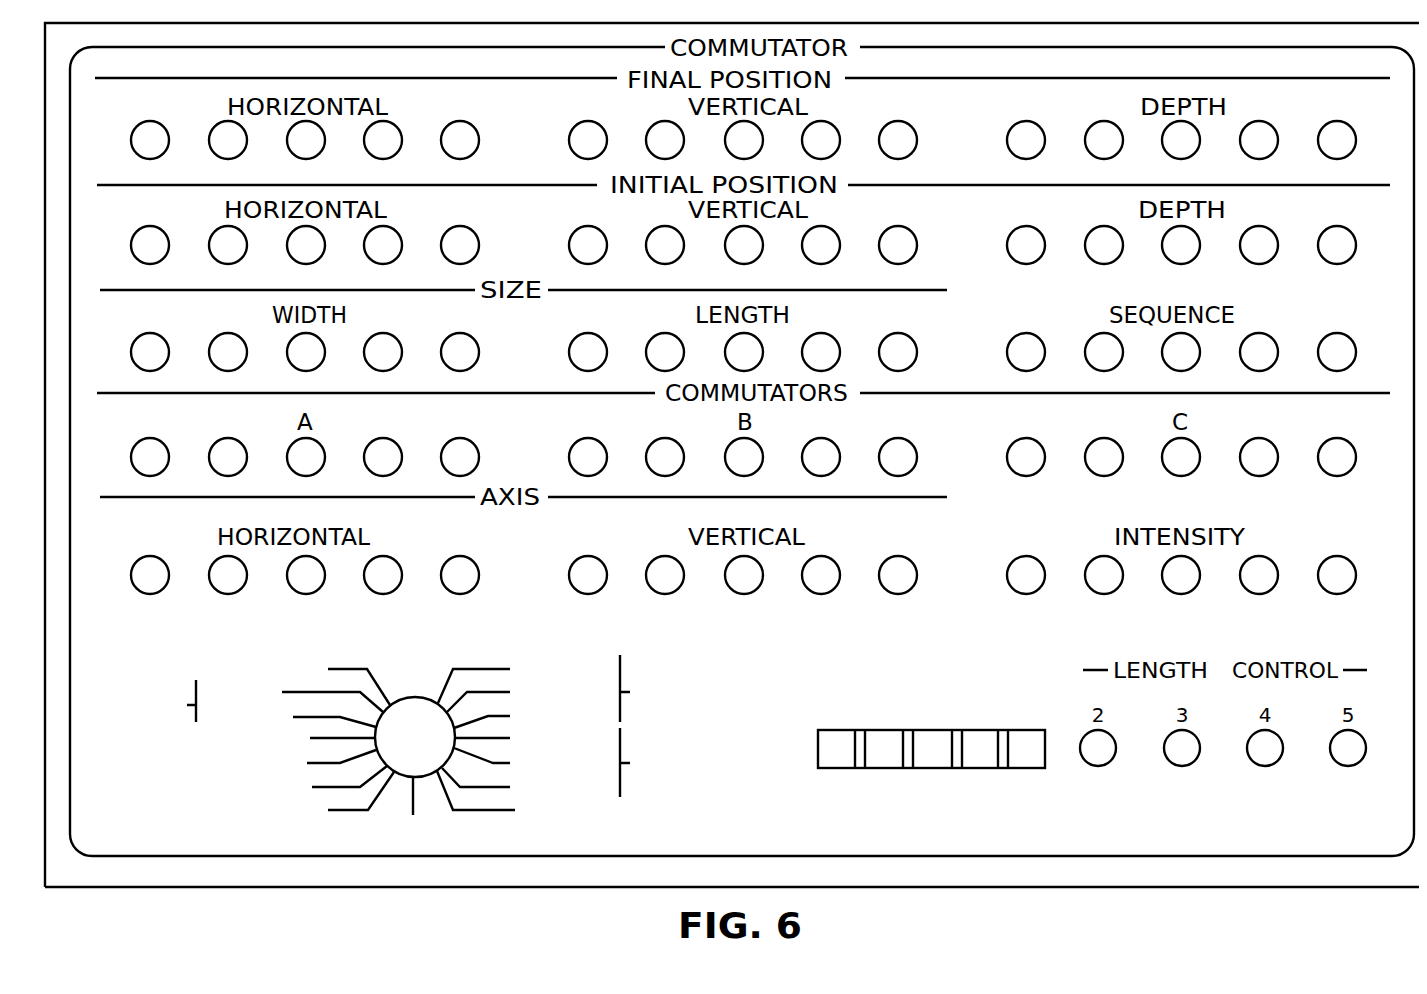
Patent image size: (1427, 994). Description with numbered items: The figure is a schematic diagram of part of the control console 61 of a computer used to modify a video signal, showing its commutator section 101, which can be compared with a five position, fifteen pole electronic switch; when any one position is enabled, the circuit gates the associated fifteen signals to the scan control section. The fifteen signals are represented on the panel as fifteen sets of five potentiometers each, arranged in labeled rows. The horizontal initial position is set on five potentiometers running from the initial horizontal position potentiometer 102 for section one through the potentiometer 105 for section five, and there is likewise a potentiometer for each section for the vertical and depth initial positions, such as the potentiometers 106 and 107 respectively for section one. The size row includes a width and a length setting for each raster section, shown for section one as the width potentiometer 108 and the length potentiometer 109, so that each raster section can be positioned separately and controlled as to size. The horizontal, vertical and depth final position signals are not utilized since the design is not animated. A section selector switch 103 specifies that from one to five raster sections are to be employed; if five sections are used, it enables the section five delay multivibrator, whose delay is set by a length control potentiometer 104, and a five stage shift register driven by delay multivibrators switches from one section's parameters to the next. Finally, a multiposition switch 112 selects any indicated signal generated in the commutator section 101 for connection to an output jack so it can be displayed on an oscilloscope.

The control console 61 is at (338, 910).
The commutator section 101 is at (146, 847).
The initial horizontal position potentiometer 102 is at (147, 232).
The section selector switch 103 is at (937, 788).
The length control potentiometer 104 is at (1353, 765).
The potentiometer 105 is at (462, 232).
The potentiometer 106 is at (595, 232).
The potentiometer 107 is at (1020, 232).
The width potentiometer 108 is at (147, 340).
The length potentiometer 109 is at (590, 340).
The multiposition switch 112 is at (432, 749).